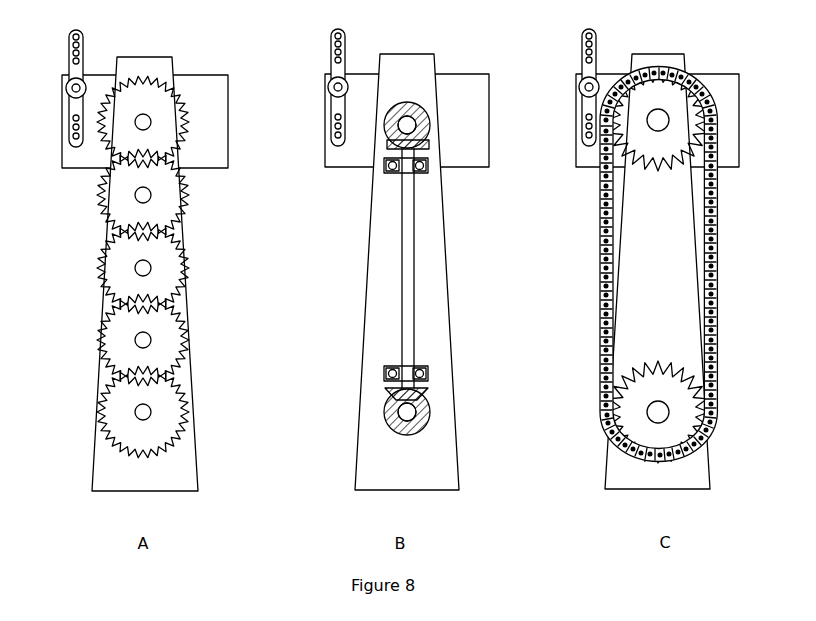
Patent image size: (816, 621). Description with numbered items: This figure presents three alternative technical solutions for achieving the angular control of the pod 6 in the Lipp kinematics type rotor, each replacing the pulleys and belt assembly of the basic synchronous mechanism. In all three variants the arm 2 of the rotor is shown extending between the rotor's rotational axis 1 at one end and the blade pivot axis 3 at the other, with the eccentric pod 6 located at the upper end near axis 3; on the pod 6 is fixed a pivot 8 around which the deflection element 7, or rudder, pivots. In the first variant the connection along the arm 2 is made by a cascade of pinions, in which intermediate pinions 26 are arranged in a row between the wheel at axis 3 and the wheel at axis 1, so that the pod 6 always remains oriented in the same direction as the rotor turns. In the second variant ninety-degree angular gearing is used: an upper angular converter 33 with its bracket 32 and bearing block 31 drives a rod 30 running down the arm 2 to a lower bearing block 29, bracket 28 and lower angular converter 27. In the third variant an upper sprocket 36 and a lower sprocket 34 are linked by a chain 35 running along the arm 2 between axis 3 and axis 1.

The axis 1 is at (149, 417).
The arm 2 is at (176, 306).
The axis 3 is at (148, 127).
The pod 6 is at (229, 122).
The deflection element 7 is at (70, 50).
The pivot 8 is at (74, 90).
The intermediate gears 26 is at (112, 138).
The lower pulley 27 is at (384, 418).
The bracket 28 is at (386, 391).
The lower bearing block 29 is at (384, 374).
The connecting rod 30 is at (404, 315).
The upper bearing block 31 is at (386, 178).
The upper bracket 32 is at (386, 151).
The upper pulley 33 is at (382, 132).
The lower sprocket 34 is at (624, 418).
The chain 35 is at (601, 275).
The upper sprocket 36 is at (637, 135).